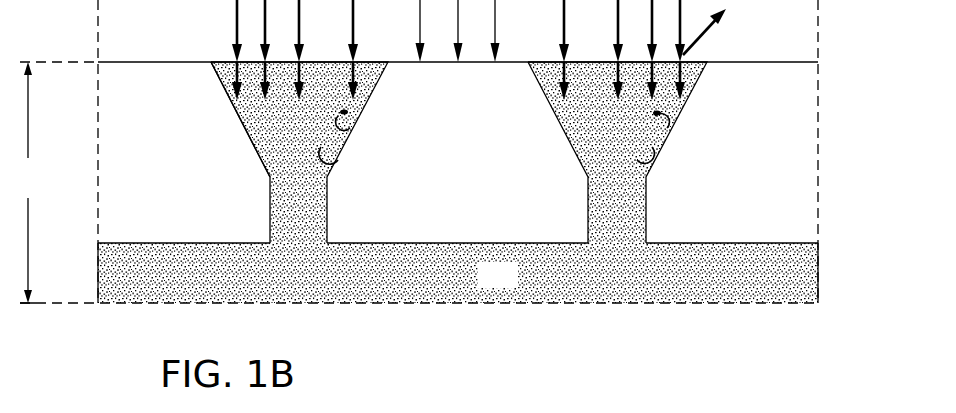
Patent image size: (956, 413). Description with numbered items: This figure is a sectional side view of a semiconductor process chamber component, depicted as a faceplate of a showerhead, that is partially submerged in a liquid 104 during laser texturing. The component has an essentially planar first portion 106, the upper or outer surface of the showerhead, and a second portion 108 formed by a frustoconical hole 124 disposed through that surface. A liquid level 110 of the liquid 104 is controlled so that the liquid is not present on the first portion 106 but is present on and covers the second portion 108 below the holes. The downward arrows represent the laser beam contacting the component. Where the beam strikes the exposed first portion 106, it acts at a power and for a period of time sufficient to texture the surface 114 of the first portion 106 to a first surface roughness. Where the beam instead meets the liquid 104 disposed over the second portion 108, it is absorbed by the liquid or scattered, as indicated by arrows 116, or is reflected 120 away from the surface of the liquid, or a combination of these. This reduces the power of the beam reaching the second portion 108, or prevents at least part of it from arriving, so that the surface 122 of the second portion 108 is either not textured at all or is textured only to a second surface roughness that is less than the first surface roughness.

The liquid 104 is at (514, 284).
The first portion 106 is at (116, 60).
The second portion 108 is at (350, 134).
The liquid level 110 is at (27, 182).
The surface 114 is at (512, 61).
The arrows 116 is at (358, 66).
The reflected 120 is at (710, 33).
The surface 122 is at (335, 167).
The frustoconical hole 124 is at (238, 148).